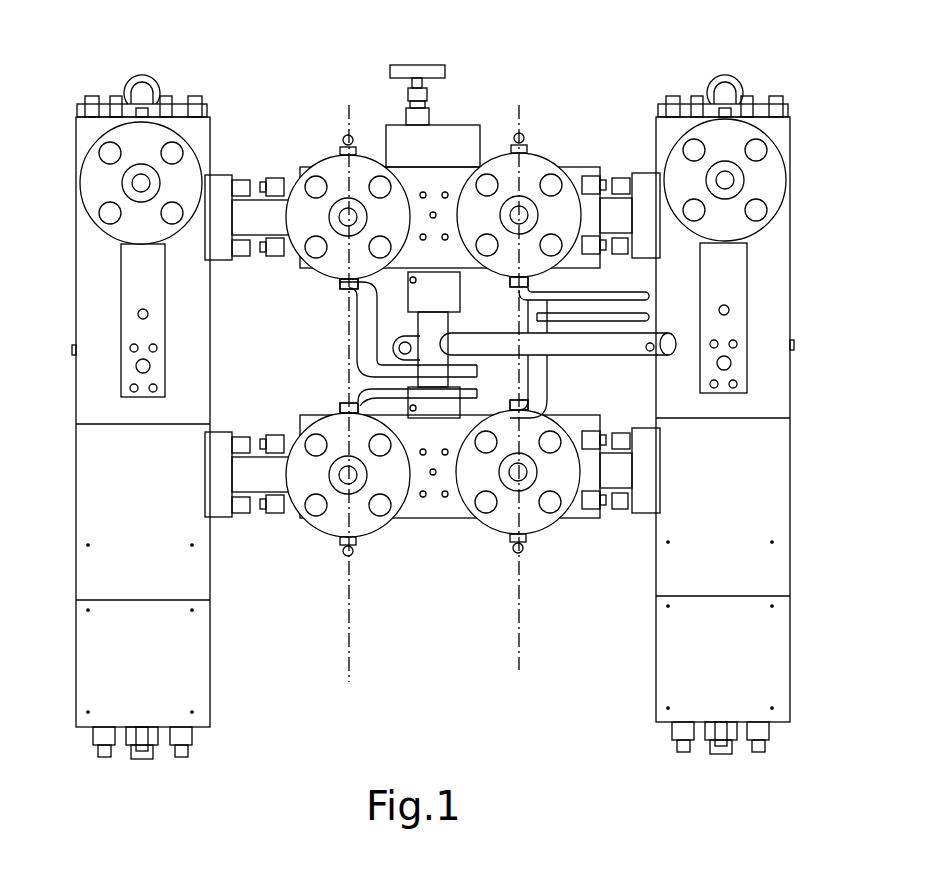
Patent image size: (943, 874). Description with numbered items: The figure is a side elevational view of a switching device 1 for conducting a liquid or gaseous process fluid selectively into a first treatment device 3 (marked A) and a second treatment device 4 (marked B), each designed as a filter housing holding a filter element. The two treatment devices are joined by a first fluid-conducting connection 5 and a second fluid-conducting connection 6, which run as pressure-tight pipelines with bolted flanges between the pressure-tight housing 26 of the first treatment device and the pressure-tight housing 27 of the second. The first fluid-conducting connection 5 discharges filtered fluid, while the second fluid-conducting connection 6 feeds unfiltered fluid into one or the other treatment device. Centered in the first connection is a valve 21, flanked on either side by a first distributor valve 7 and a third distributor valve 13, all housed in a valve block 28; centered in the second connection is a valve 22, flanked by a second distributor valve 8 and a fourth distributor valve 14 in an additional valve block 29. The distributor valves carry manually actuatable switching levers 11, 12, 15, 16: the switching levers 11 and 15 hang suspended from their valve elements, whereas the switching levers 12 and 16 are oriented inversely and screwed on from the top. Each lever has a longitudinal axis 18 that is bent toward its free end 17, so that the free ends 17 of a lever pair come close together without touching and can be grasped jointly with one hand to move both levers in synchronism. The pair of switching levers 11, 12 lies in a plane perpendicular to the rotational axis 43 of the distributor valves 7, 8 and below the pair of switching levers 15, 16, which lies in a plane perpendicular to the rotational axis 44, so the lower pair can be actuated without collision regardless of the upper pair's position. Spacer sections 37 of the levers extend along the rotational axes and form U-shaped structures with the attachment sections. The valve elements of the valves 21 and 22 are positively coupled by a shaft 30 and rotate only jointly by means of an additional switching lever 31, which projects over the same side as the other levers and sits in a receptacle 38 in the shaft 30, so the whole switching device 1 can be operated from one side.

The switching device 1 is at (345, 682).
The first treatment device 3 is at (155, 417).
The second treatment device 4 is at (713, 414).
The first fluid-conducting connection 5 is at (256, 210).
The second fluid-conducting connection 6 is at (257, 462).
The first distributor valve 7 is at (330, 178).
The second distributor valve 8 is at (338, 508).
The first switching lever 11 is at (403, 364).
The second switching lever 12 is at (400, 386).
The third distributor valve 13 is at (530, 165).
The fourth distributor valve 14 is at (527, 512).
The third switching lever 15 is at (598, 294).
The fourth switching lever 16 is at (637, 325).
The free end 17 is at (470, 392).
The longitudinal axis 18 is at (345, 288).
The valve 21 is at (432, 180).
The valve 22 is at (432, 505).
The pressure-tight housing 26 is at (88, 262).
The pressure-tight housing 27 is at (780, 238).
The valve block 28 is at (555, 156).
The valve block 29 is at (298, 528).
The shaft 30 is at (433, 330).
The additional switching lever 31 is at (617, 346).
The spacer section 37 is at (362, 306).
The receptacle 38 is at (445, 318).
The rotational axis 43 is at (352, 627).
The rotational axis 44 is at (518, 652).